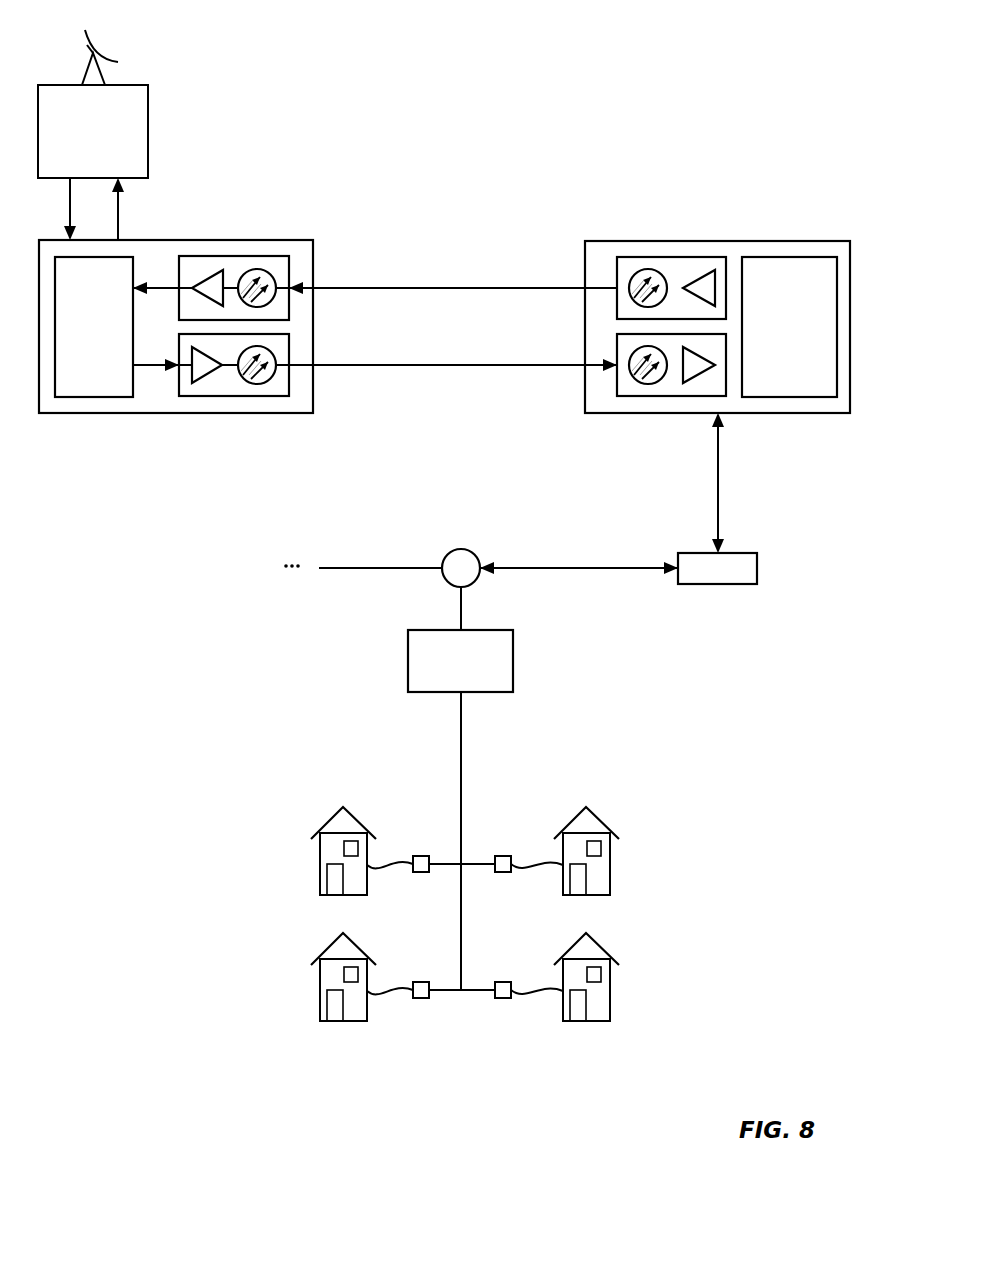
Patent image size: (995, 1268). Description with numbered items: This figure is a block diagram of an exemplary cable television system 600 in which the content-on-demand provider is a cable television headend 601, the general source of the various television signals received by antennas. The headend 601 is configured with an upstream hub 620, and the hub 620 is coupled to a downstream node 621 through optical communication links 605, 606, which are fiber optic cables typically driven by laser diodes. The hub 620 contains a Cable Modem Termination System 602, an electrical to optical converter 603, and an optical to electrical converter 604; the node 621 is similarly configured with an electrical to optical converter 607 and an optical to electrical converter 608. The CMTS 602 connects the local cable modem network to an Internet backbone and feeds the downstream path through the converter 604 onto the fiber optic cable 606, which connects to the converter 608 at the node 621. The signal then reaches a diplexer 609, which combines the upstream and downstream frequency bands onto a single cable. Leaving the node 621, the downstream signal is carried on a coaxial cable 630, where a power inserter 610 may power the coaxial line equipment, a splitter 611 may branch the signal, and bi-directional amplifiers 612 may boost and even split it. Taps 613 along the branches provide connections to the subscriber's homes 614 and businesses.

The cable television system 600 is at (687, 120).
The headend 601 is at (93, 104).
The Cable Modem Termination System (CMTS) 602 is at (94, 327).
The electrical to optical converter 603 is at (217, 256).
The optical to electrical converter 604 is at (234, 396).
The optical communication link 605 is at (447, 288).
The optical communication link 606 is at (405, 365).
The electrical to optical converter 607 is at (670, 257).
The optical to electrical converter 608 is at (670, 396).
The diplexer 609 is at (789, 327).
The power inserter 610 is at (717, 568).
The splitter 611 is at (461, 549).
The bi-directional amplifier 612 is at (460, 639).
The taps 613 is at (421, 856).
The subscriber's homes 614 is at (343, 807).
The upstream hub 620 is at (133, 413).
The downstream node 621 is at (828, 413).
The coaxial cable 630 is at (718, 504).